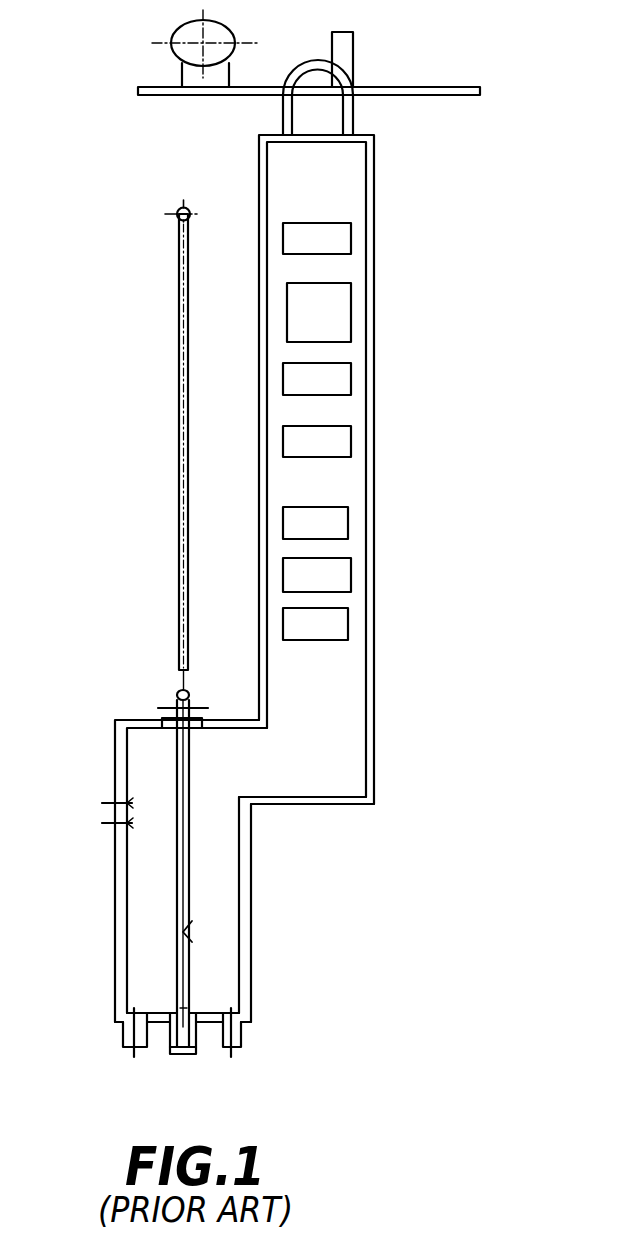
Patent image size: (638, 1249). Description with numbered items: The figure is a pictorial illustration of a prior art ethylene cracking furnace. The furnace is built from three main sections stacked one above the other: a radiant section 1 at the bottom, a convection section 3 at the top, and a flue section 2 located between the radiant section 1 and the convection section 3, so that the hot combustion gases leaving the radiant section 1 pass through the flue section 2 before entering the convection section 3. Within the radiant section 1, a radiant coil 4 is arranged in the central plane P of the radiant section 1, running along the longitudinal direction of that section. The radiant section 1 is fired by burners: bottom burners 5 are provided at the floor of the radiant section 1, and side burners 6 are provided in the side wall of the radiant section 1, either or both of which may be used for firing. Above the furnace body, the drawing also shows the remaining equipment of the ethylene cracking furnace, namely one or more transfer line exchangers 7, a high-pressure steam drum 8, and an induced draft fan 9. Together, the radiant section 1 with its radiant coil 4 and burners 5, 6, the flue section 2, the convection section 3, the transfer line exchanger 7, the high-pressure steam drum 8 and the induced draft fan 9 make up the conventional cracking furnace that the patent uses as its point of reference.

The radiant section 1 is at (113, 887).
The flue section 2 is at (312, 774).
The convection section 3 is at (437, 537).
The radiant coil 4 is at (192, 937).
The bottom burners 5 is at (122, 1037).
The side burners 6 is at (112, 803).
The transfer line exchanger 7 is at (178, 513).
The high-pressure steam drum 8 is at (172, 43).
The induced draft fan 9 is at (352, 63).
The central plane P is at (205, 845).